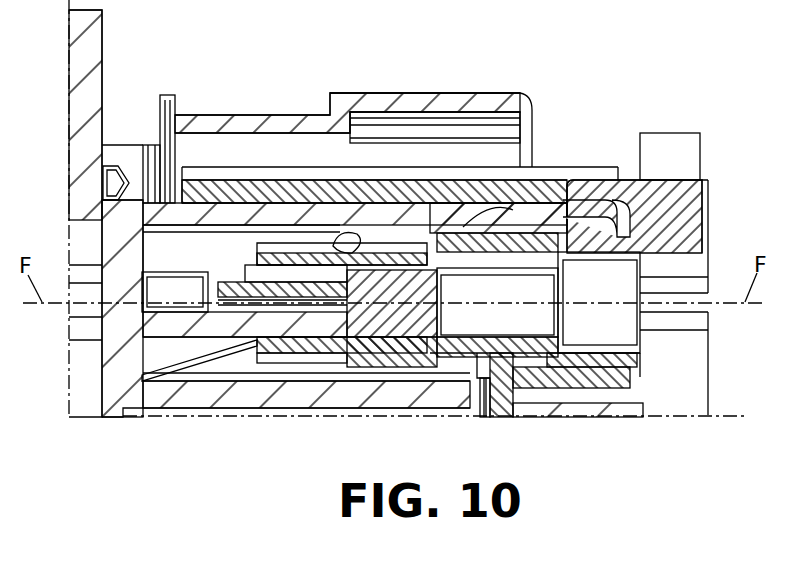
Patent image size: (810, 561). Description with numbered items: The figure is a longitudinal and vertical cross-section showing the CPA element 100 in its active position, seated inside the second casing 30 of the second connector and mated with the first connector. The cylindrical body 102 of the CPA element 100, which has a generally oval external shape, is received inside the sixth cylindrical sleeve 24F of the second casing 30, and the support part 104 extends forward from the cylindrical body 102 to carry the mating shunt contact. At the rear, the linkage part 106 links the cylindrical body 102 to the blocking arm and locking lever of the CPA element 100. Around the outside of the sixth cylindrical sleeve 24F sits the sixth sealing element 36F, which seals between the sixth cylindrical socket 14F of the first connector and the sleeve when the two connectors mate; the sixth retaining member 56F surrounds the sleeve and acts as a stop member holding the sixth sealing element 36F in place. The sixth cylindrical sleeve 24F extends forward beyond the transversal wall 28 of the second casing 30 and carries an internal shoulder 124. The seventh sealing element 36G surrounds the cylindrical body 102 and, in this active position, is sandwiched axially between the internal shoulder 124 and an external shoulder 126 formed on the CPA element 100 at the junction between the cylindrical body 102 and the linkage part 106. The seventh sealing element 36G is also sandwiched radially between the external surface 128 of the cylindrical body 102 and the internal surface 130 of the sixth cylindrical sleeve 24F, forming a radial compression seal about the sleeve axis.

The second casing 30 is at (203, 193).
The sixth cylindrical socket 14F is at (243, 213).
The sixth retaining member 56F is at (343, 235).
The sixth sealing element 36F is at (457, 238).
The sixth cylindrical sleeve 24F is at (488, 240).
The internal shoulder 124 is at (513, 233).
The seventh sealing element 36G is at (528, 233).
The external shoulder 126 is at (540, 233).
The CPA element 100 is at (618, 288).
The support part 104 is at (340, 362).
The cylindrical body 102 is at (448, 365).
The transversal wall 28 is at (497, 400).
The internal surface 130 is at (513, 388).
The external surface 128 is at (553, 383).
The linkage part 106 is at (593, 360).